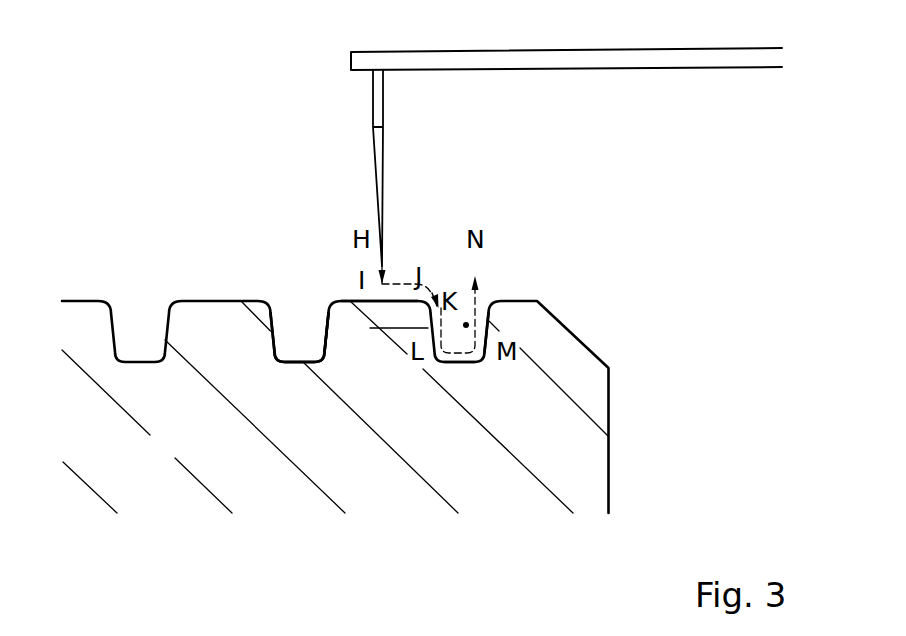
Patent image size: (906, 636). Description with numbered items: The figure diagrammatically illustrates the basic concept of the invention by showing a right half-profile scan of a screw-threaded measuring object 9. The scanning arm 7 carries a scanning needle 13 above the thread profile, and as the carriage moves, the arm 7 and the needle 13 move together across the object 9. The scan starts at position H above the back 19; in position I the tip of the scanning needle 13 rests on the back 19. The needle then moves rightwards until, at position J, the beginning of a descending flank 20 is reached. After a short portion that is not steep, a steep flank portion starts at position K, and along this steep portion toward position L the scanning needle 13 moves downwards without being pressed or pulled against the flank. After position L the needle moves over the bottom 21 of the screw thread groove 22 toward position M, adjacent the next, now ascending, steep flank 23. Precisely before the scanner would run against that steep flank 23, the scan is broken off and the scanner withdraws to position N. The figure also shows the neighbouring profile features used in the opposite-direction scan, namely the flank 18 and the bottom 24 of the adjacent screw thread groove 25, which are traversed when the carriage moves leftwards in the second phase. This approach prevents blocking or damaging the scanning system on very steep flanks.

The scanning arm 7 is at (600, 52).
The scanning needle 13 is at (385, 110).
The measuring object 9 is at (131, 474).
The flank 18 is at (329, 333).
The back 19 is at (350, 300).
The descending flank 20 is at (370, 328).
The bottom 21 is at (463, 363).
The screw thread groove 22 is at (466, 322).
The ascending steep flank 23 is at (496, 327).
The bottom 24 is at (302, 363).
The screw thread groove 25 is at (300, 333).